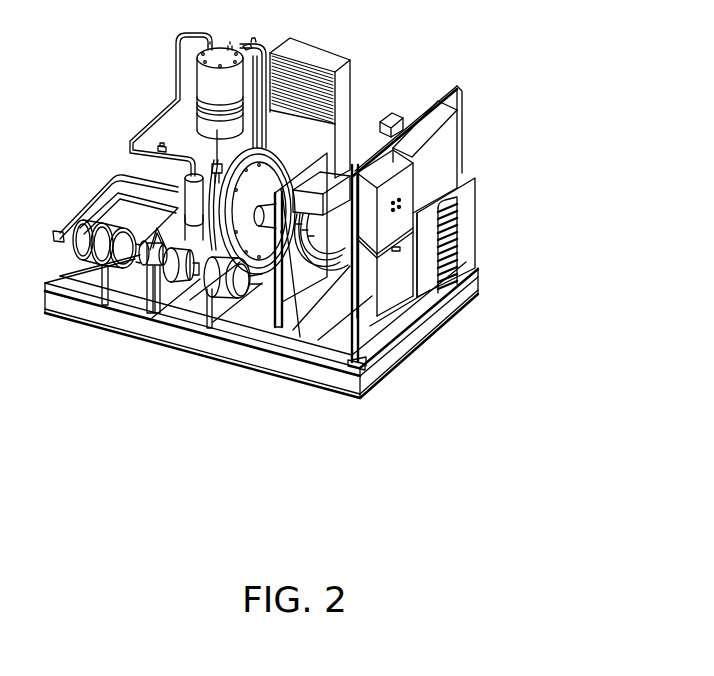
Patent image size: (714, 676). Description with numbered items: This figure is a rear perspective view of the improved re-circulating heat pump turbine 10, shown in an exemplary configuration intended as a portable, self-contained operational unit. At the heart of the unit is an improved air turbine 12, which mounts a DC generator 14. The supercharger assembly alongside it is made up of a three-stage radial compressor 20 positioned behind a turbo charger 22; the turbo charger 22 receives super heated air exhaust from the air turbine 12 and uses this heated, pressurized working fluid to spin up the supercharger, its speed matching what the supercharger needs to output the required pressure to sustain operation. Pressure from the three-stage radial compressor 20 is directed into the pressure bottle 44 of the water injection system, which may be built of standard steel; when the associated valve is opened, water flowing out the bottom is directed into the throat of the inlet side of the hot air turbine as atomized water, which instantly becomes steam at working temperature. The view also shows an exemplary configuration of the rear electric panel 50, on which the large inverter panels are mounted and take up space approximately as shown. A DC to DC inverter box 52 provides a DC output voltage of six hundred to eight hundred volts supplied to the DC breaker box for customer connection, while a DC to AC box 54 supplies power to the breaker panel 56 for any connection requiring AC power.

The re-circulating heat pump turbine 10 is at (423, 420).
The air turbine 12 is at (278, 160).
The DC generator 14 is at (353, 167).
The 3-stage radial compressor 20 is at (120, 278).
The turbo charger 22 is at (173, 272).
The pressure bottle 44 is at (203, 157).
The rear electric panel 50 is at (502, 227).
The DC to DC inverter box 52 is at (390, 292).
The DC to AC box 54 is at (465, 162).
The breaker panel 56 is at (507, 208).